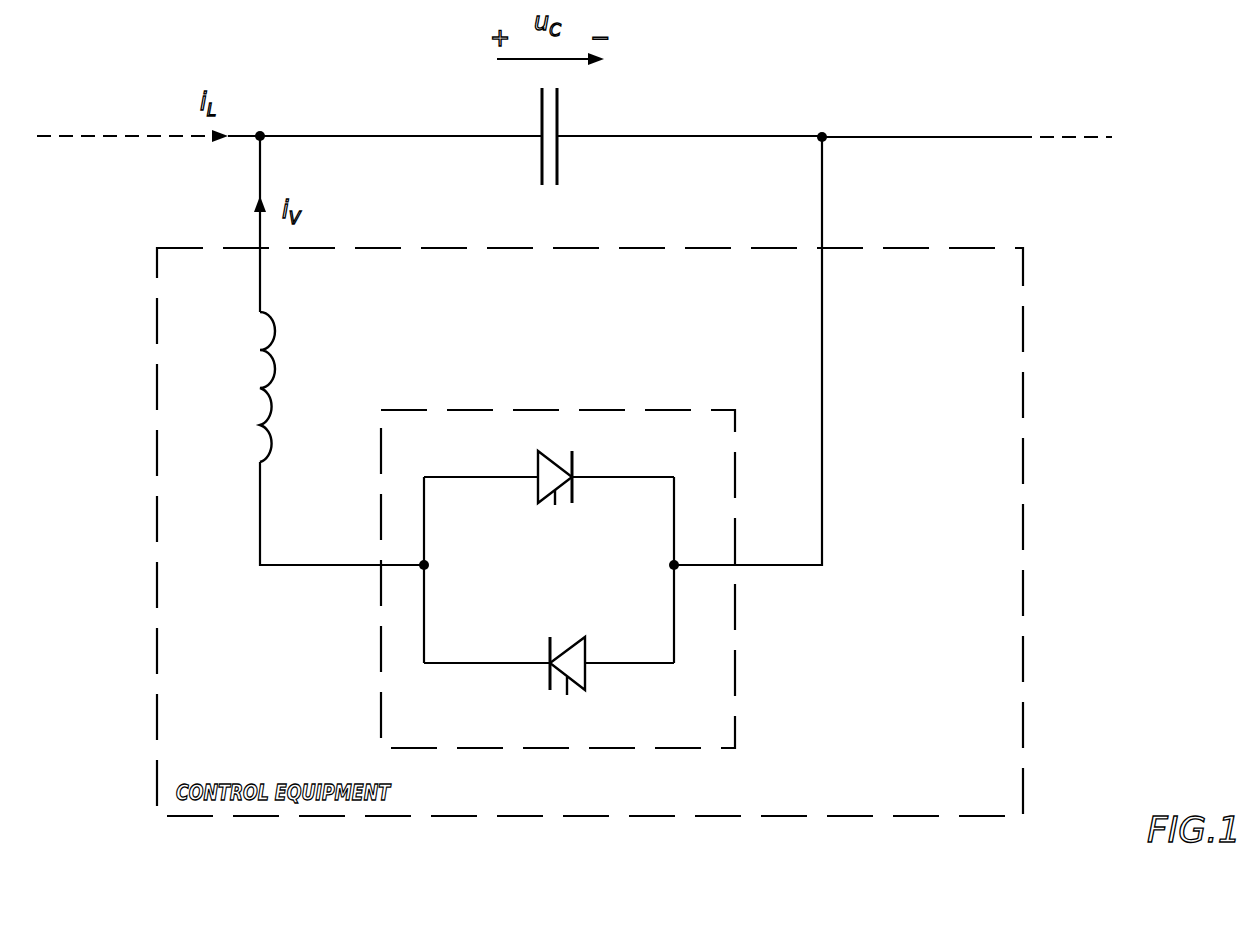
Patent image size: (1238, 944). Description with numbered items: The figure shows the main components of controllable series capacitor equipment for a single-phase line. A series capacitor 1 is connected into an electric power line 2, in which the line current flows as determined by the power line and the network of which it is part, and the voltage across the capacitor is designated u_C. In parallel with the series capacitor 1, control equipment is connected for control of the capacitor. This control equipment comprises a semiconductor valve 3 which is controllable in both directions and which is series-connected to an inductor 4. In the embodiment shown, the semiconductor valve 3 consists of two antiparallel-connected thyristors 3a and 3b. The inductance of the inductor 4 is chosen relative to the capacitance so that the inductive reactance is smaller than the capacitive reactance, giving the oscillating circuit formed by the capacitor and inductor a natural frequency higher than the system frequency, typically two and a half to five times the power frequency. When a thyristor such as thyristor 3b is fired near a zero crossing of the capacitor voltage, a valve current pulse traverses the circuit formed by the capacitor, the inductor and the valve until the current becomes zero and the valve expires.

The series capacitor 1 is at (565, 148).
The electric power line 2 is at (912, 118).
The semiconductor valve 3 is at (558, 579).
The thyristor 3a is at (580, 470).
The thyristor 3b is at (540, 652).
The inductor 4 is at (290, 377).